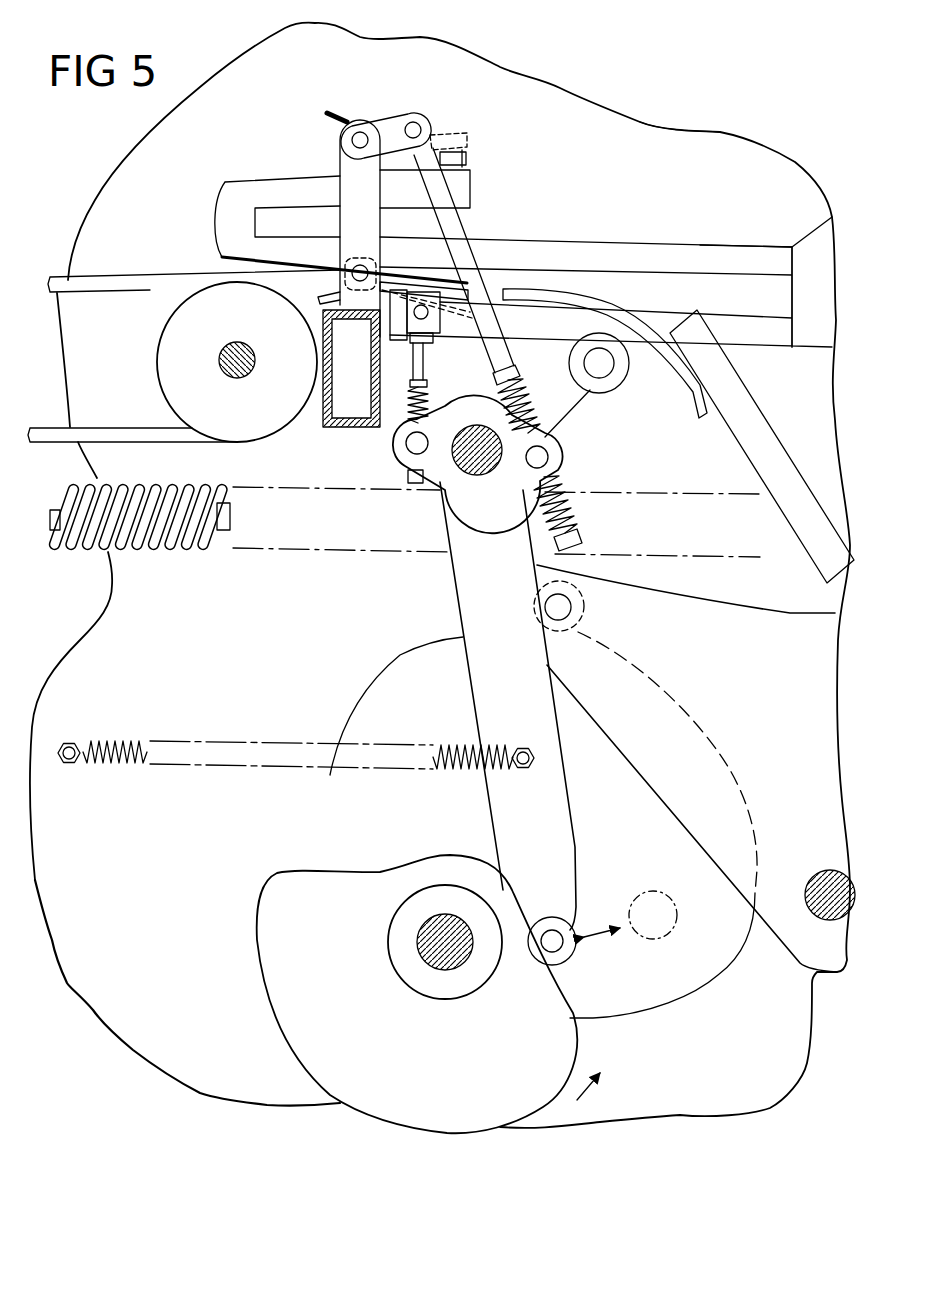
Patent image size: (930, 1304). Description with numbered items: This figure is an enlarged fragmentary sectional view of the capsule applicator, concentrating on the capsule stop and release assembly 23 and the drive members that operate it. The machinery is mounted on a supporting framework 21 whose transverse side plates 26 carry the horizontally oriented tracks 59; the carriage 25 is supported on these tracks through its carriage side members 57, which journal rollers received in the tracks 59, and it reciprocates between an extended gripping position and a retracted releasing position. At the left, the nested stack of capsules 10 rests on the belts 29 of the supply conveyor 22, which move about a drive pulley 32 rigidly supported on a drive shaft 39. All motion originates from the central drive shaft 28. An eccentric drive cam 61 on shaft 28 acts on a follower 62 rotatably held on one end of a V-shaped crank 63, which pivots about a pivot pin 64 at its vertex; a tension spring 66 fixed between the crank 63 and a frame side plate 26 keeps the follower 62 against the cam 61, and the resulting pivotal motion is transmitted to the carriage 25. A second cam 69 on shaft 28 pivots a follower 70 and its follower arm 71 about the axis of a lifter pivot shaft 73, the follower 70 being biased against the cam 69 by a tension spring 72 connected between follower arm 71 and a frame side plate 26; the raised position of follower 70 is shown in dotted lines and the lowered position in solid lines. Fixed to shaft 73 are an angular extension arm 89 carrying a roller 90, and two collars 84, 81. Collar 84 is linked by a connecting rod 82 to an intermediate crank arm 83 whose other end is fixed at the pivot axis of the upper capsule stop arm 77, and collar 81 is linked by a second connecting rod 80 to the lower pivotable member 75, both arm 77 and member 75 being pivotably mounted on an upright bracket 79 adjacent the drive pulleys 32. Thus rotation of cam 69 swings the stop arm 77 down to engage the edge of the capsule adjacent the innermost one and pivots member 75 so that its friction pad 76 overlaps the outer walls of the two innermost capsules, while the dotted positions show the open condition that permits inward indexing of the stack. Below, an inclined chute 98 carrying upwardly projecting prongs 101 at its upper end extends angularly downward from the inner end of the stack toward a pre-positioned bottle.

The capsule 10 is at (452, 178).
The supporting framework 21 is at (644, 120).
The supply conveyor 22 is at (239, 446).
The capsule stop and release assembly 23 is at (558, 434).
The carriage 25 is at (796, 242).
The frame side plate 26 is at (698, 138).
The drive shaft 28 is at (422, 939).
The belts 29 is at (125, 293).
The drive pulley 32 is at (274, 422).
The drive shaft 39 is at (238, 379).
The carriage side member 57 is at (818, 237).
The tracks 59 is at (617, 242).
The eccentric drive cam 61 is at (438, 655).
The follower 62 is at (572, 617).
The V-shaped crank 63 is at (695, 596).
The pivot pin 64 is at (818, 878).
The tension spring 66 is at (213, 548).
The cam 69 is at (263, 893).
The follower 70 is at (575, 933).
The follower arm 71 is at (476, 712).
The tension spring 72 is at (113, 745).
The lifter pivot shaft 73 is at (478, 470).
The lower pivotable member 75 is at (427, 315).
The friction pad 76 is at (462, 285).
The capsule stop arm 77 is at (470, 161).
The upright bracket 79 is at (345, 197).
The second connecting rod 80 is at (421, 371).
The second collar 81 is at (400, 446).
The connecting rod 82 is at (442, 201).
The intermediate crank arm 83 is at (398, 96).
The collar 84 is at (560, 458).
The angular extension arm 89 is at (560, 381).
The roller 90 is at (610, 392).
The chute 98 is at (772, 425).
The prongs 101 is at (569, 301).